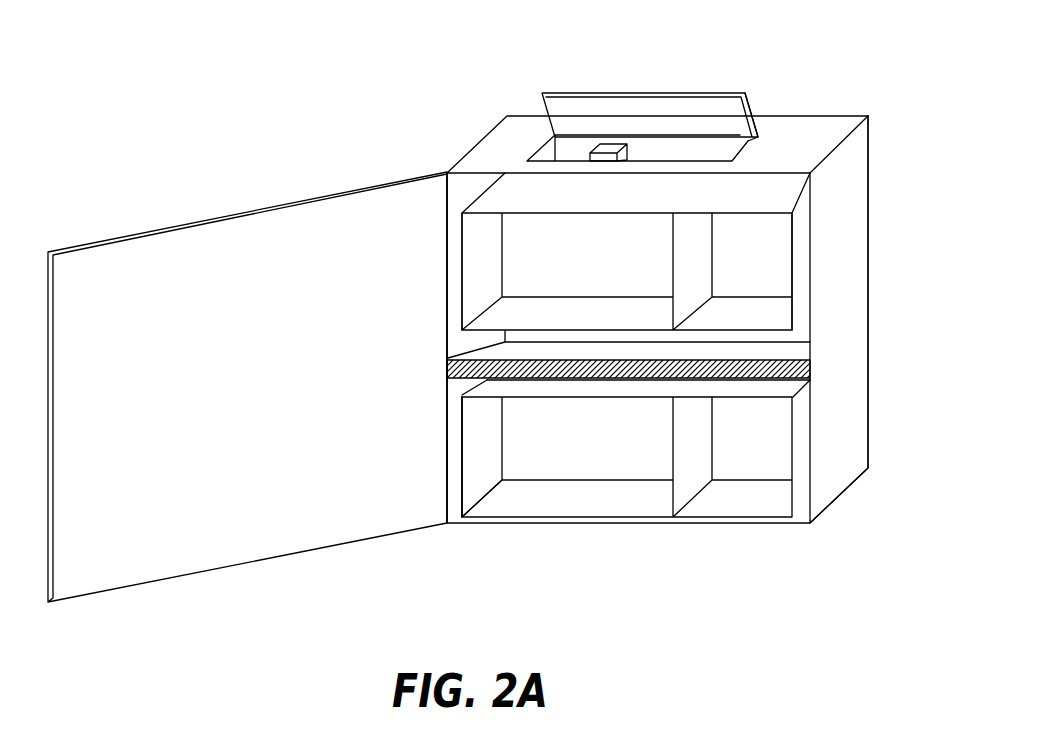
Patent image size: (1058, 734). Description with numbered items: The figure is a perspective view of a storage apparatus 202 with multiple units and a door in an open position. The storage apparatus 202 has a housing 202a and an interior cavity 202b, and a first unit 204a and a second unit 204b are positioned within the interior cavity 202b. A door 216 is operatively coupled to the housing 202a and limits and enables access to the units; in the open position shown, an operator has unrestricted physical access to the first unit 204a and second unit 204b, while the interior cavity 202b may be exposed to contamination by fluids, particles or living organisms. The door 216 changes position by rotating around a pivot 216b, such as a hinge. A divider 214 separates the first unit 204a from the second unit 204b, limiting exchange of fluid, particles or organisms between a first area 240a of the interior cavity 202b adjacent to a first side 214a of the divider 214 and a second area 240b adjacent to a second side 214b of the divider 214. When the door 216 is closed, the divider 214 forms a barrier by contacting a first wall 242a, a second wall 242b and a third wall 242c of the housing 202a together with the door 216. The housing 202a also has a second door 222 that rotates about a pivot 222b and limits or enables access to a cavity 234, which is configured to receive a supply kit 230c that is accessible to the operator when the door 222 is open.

The storage apparatus 202 is at (513, 116).
The housing 202a is at (482, 152).
The interior cavity 202b is at (458, 190).
The door 216 is at (258, 225).
The pivot 216b is at (445, 458).
The door 222 is at (623, 93).
The pivot 222b is at (735, 135).
The cavity 234 is at (662, 150).
The supply kit 230c is at (607, 150).
The first unit 204a is at (792, 232).
The second unit 204b is at (620, 517).
The first wall 242a is at (453, 475).
The second wall 242b is at (796, 333).
The third wall 242c is at (847, 253).
The divider 214 is at (808, 372).
The first side 214a is at (787, 352).
The second side 214b is at (753, 380).
The first area 240a is at (453, 337).
The second area 240b is at (455, 408).